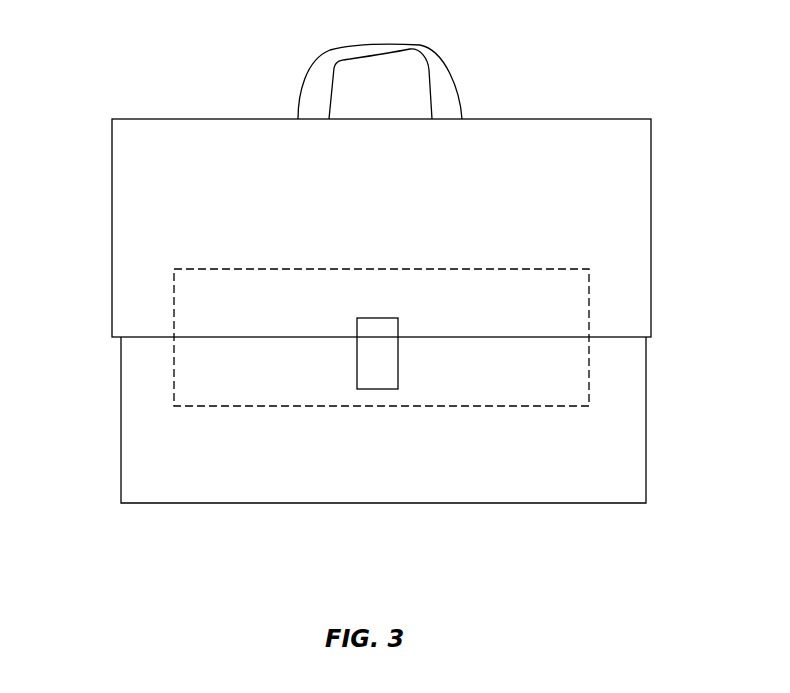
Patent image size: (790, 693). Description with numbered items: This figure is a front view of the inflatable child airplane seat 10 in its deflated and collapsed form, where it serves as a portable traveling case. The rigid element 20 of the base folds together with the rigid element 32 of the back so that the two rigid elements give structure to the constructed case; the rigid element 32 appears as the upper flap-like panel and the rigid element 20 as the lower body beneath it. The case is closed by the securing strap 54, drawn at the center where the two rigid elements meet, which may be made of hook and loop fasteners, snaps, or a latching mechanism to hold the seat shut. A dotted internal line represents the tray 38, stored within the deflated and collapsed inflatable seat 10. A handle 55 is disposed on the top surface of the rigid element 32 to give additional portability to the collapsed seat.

The inflatable seat 10 is at (522, 552).
The rigid element 20 is at (167, 463).
The rigid element 32 is at (145, 213).
The tray 38 is at (590, 286).
The strap 54 is at (380, 336).
The handle 55 is at (323, 85).